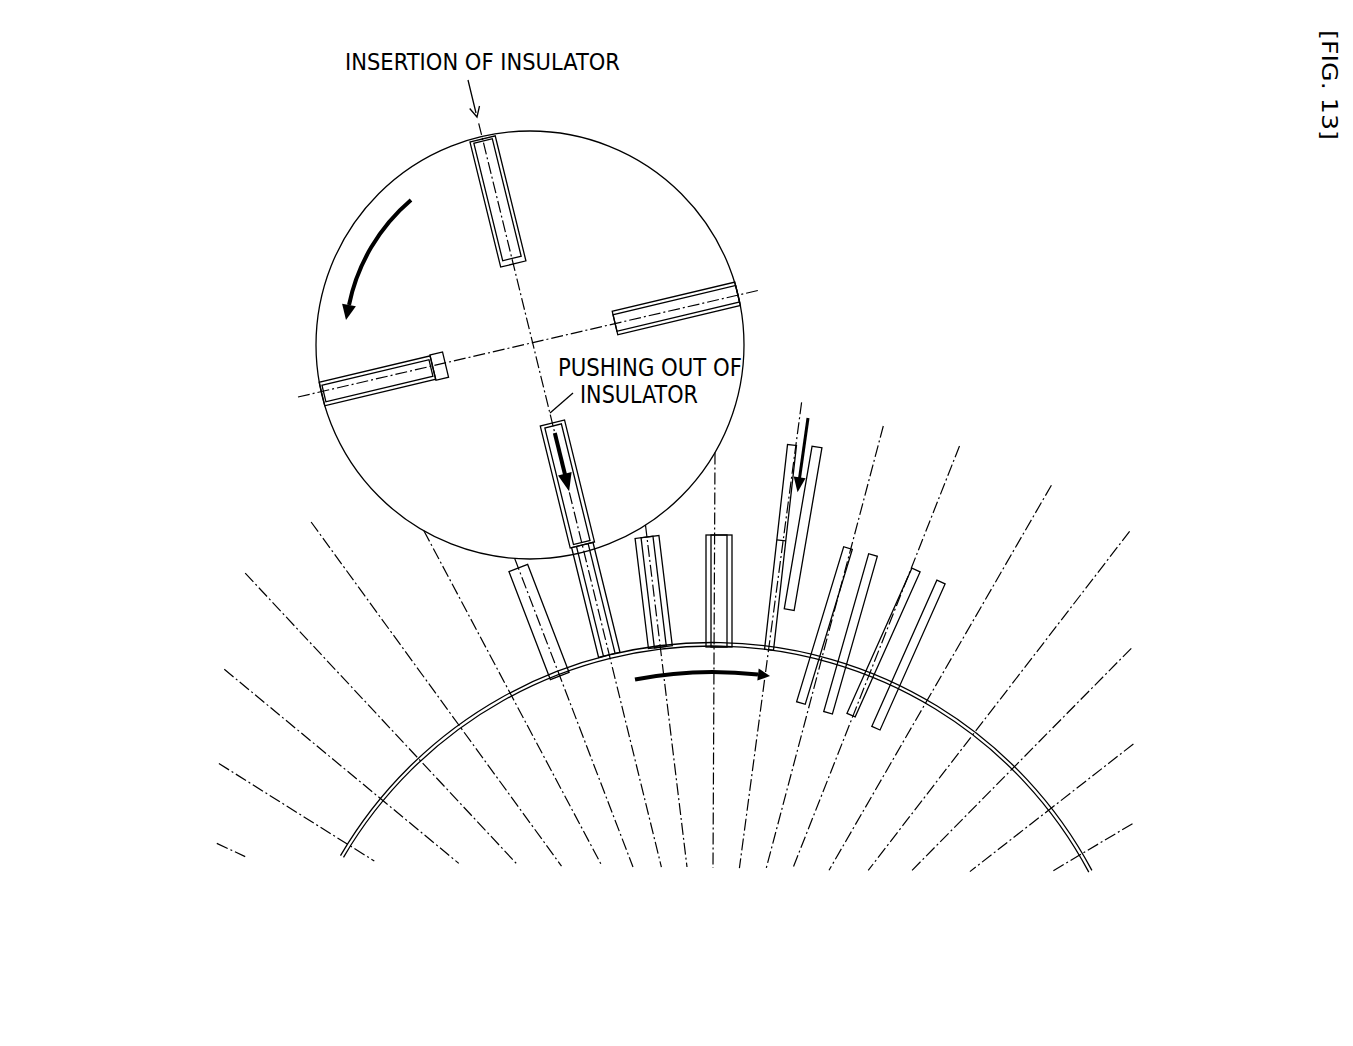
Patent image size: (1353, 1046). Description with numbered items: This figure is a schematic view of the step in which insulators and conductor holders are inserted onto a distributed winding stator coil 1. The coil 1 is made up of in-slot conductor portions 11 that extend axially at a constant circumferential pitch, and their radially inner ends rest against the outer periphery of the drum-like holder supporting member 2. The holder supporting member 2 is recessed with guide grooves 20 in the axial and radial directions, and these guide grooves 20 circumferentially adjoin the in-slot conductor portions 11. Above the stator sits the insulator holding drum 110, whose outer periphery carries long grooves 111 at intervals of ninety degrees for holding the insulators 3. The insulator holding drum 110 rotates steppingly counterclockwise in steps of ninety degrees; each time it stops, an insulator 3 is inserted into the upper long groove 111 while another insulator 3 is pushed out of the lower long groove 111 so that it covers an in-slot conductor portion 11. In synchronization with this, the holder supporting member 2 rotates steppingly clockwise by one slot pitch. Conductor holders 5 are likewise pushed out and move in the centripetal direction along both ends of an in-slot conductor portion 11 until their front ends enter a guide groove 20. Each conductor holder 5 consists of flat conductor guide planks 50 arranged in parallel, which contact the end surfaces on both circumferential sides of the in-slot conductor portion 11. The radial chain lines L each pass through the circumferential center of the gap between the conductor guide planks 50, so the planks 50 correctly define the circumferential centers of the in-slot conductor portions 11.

The distributed winding stator coil 1 is at (675, 497).
The holder supporting member 2 is at (937, 731).
The insulator 3 is at (497, 163).
The conductor holder 5 is at (877, 555).
The in-slot conductor portion 11 is at (540, 626).
The guide groove 20 is at (889, 709).
The conductor guide plank 50 is at (786, 472).
The insulator holding drum 110 is at (666, 212).
The long groove 111 is at (485, 210).
The chain line L is at (255, 693).